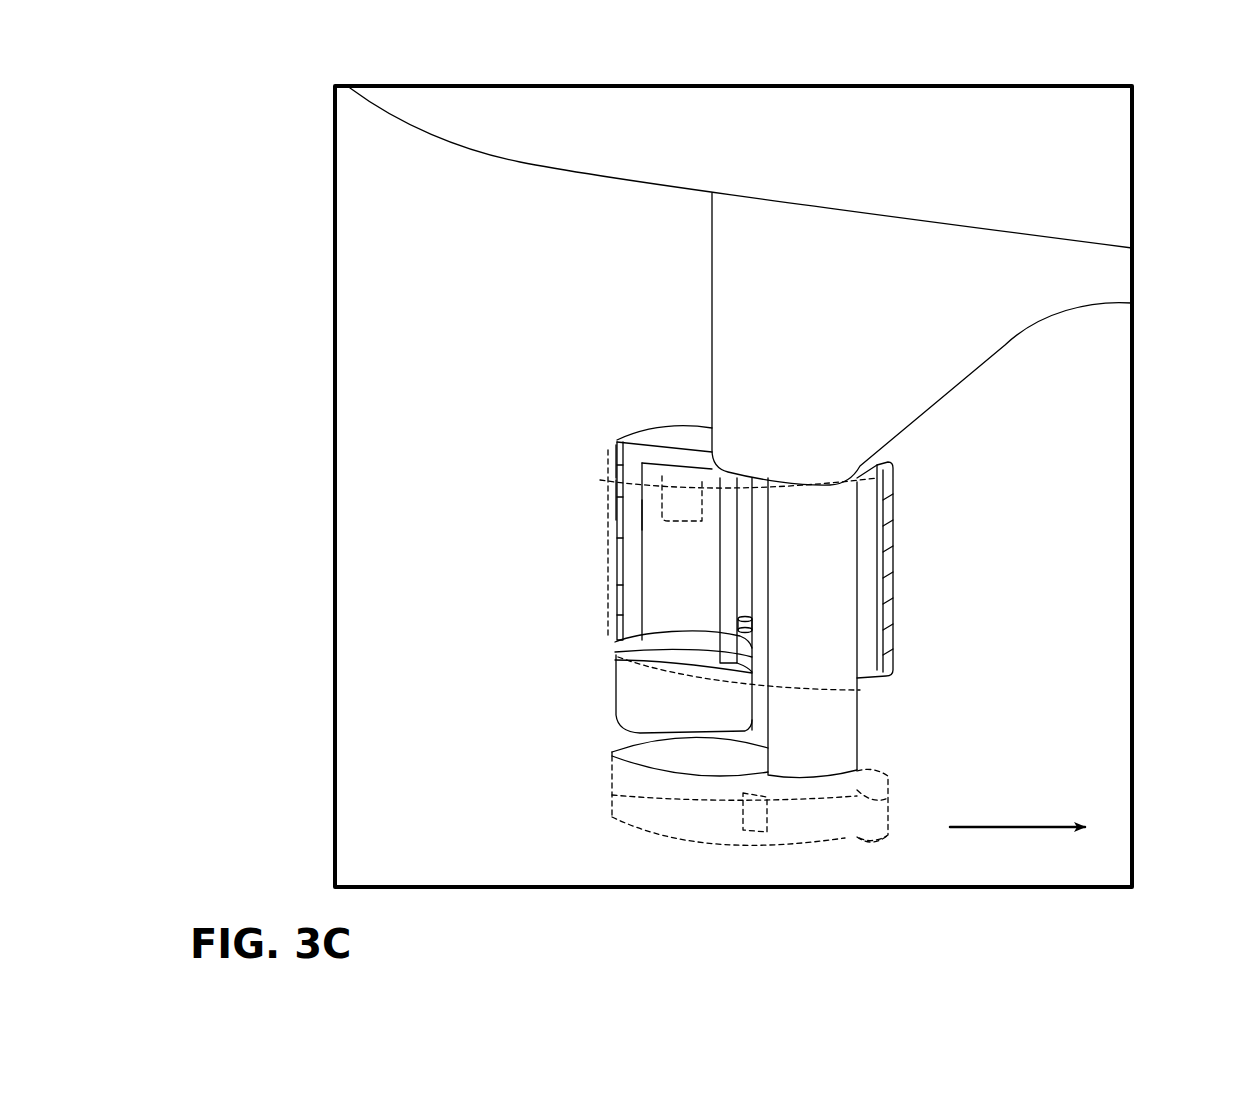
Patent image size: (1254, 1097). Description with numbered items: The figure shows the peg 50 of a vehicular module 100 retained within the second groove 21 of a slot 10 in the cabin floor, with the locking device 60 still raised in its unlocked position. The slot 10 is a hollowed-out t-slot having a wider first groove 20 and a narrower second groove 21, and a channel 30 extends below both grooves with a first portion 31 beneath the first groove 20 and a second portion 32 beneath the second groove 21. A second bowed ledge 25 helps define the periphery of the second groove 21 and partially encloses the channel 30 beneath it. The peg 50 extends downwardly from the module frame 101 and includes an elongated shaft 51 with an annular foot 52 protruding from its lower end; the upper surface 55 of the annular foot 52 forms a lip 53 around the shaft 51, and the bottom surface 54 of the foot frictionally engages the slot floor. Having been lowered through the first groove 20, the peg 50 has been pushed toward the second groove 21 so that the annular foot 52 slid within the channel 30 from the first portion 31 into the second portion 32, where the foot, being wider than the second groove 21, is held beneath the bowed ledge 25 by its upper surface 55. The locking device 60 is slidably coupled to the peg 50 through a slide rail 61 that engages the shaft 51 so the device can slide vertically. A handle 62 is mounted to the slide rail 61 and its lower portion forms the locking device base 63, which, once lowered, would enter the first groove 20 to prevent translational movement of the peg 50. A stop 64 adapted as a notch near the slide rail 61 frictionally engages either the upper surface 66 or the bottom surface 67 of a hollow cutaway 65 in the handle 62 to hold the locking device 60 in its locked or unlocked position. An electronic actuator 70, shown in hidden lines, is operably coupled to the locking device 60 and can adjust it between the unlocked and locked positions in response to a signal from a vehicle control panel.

The vehicular module 100 is at (877, 81).
The module frame 101 is at (742, 323).
The slot 10 is at (607, 753).
The first groove 20 is at (662, 778).
The second groove 21 is at (836, 786).
The second bowed ledge 25 is at (783, 780).
The channel 30 is at (745, 820).
The first portion 31 is at (653, 817).
The second portion 32 is at (875, 845).
The peg 50 is at (910, 543).
The elongated shaft 51 is at (830, 712).
The annular foot 52 is at (778, 815).
The lip 53 is at (877, 775).
The bottom surface 54 is at (834, 847).
The upper surface 55 is at (743, 792).
The locking device 60 is at (602, 432).
The slide rail 61 is at (767, 527).
The handle 62 is at (610, 498).
The locking device base 63 is at (650, 700).
The stop 64 is at (742, 628).
The hollow cutaway 65 is at (652, 513).
The upper surface 66 is at (610, 478).
The bottom surface 67 is at (617, 658).
The electronic actuator 70 is at (690, 478).